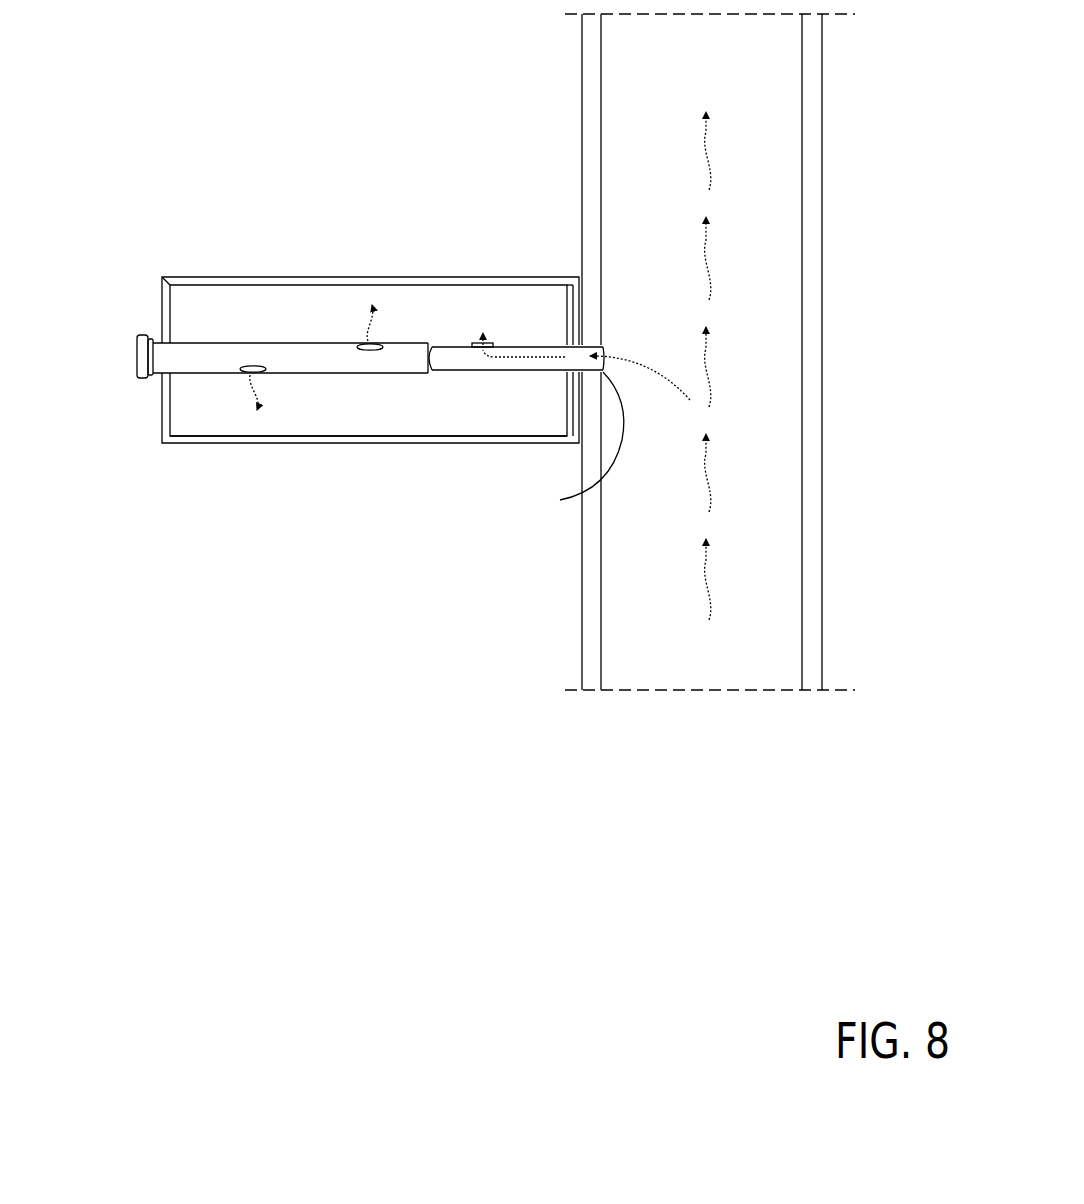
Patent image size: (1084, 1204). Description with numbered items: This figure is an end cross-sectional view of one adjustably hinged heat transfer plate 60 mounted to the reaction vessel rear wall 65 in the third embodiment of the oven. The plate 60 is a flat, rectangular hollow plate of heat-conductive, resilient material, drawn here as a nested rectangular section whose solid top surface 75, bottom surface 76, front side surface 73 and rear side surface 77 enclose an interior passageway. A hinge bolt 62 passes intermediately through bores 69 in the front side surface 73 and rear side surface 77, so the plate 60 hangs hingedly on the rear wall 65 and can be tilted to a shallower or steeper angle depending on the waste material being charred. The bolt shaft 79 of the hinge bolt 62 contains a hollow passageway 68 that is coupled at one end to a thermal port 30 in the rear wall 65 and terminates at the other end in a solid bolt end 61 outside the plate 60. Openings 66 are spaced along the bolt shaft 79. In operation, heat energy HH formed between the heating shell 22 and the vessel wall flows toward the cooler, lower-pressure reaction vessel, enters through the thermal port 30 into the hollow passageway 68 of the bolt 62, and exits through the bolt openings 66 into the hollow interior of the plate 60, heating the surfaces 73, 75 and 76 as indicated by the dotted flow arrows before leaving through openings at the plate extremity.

The heating shell 22 is at (820, 152).
The heat energy HH is at (713, 287).
The thermal port 30 is at (604, 348).
The heat transfer plate 60 is at (305, 277).
The solid bolt end 61 is at (145, 337).
The hinge bolt 62 is at (130, 376).
The reaction vessel rear wall 65 is at (596, 138).
The bolt openings 66 is at (483, 343).
The hollow passageway 68 is at (560, 500).
The bores 69 is at (562, 344).
The front side surface 73 is at (162, 295).
The top surface 75 is at (210, 277).
The bottom surface 76 is at (368, 445).
The rear side surface 77 is at (577, 292).
The bolt shaft 79 is at (328, 346).